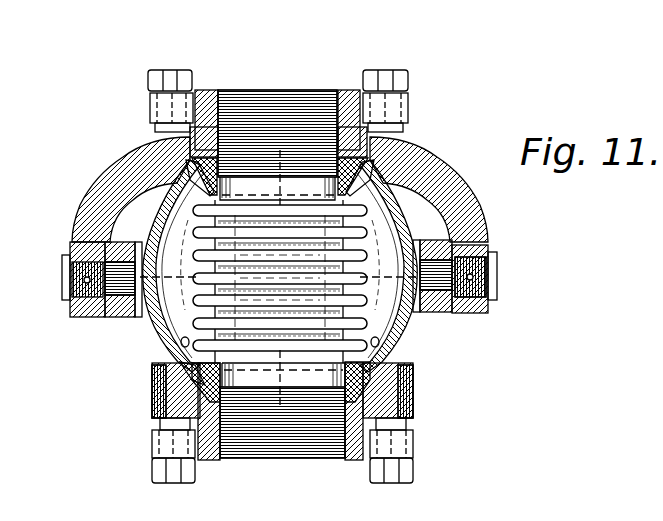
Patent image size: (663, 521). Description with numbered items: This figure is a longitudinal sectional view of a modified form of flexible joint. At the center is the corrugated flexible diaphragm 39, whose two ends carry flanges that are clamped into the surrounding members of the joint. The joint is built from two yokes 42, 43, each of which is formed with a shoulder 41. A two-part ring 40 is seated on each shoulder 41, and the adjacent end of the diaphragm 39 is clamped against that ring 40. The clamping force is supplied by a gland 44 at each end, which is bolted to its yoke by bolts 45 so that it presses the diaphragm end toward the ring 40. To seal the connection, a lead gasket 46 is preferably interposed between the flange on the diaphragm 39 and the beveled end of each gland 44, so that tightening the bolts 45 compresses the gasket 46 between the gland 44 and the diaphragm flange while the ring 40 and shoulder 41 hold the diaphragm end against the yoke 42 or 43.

The diaphragm 39 is at (365, 318).
The two-part ring 40 is at (190, 168).
The shoulder 41 is at (193, 177).
The yoke 42 is at (186, 160).
The yoke 43 is at (182, 383).
The gland 44 is at (348, 93).
The bolt 45 is at (390, 78).
The lead gasket 46 is at (335, 160).